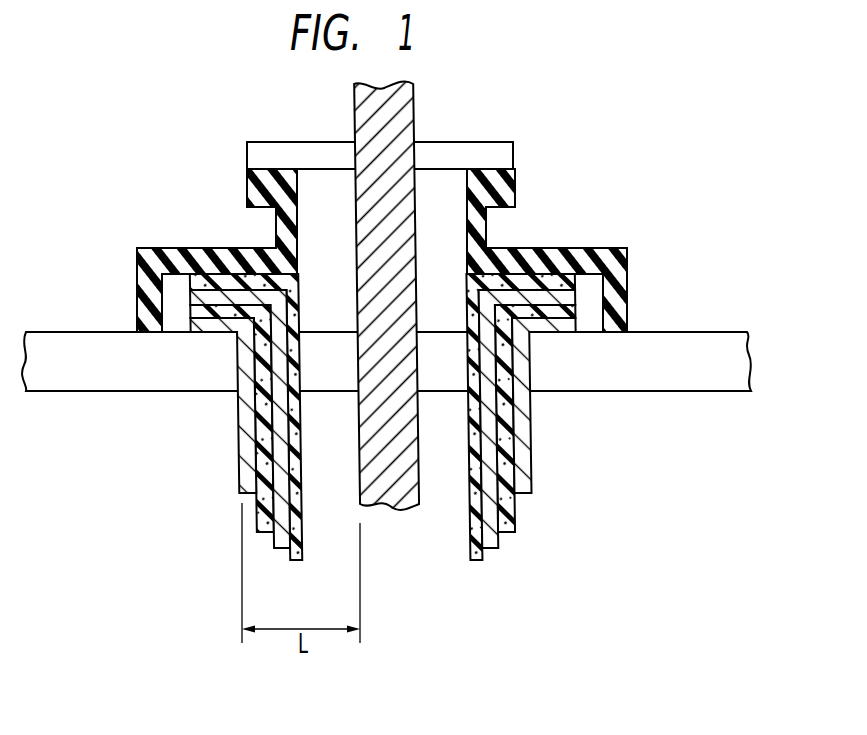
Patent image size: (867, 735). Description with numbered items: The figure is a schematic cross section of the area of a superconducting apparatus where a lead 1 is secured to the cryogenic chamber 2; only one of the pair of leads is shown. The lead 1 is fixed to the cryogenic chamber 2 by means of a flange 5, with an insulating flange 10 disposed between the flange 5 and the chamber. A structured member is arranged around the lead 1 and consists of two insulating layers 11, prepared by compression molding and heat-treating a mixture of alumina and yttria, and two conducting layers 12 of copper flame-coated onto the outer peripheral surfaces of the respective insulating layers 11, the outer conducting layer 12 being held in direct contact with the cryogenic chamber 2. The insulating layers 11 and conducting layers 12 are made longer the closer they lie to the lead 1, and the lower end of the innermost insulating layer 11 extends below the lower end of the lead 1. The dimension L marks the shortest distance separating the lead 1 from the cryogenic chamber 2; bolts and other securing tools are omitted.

The lead 1 is at (406, 109).
The cryogenic chamber 2 is at (727, 338).
The flange 5 is at (515, 153).
The insulating flange 10 is at (628, 256).
The insulating layer 11 is at (513, 517).
The conducting layer 12 is at (522, 470).